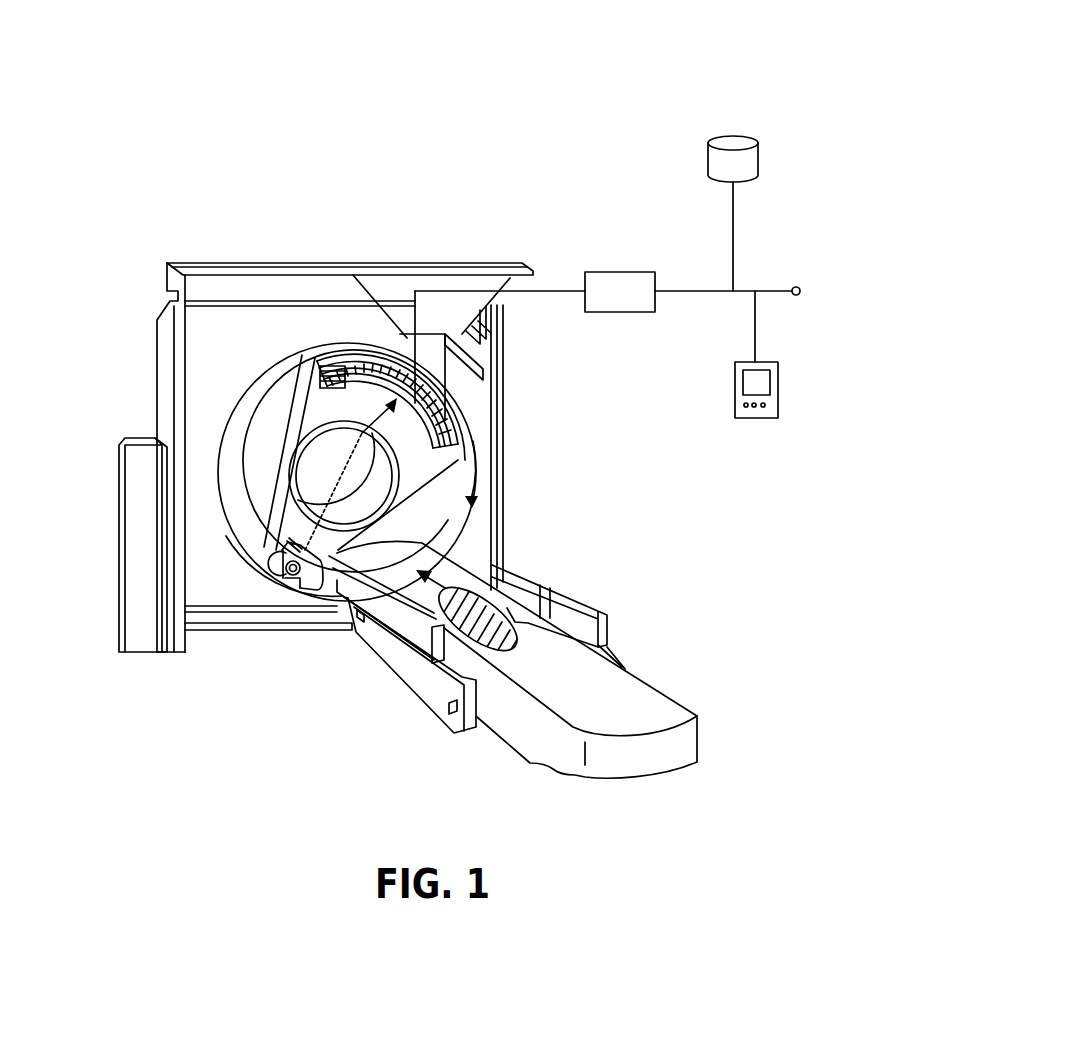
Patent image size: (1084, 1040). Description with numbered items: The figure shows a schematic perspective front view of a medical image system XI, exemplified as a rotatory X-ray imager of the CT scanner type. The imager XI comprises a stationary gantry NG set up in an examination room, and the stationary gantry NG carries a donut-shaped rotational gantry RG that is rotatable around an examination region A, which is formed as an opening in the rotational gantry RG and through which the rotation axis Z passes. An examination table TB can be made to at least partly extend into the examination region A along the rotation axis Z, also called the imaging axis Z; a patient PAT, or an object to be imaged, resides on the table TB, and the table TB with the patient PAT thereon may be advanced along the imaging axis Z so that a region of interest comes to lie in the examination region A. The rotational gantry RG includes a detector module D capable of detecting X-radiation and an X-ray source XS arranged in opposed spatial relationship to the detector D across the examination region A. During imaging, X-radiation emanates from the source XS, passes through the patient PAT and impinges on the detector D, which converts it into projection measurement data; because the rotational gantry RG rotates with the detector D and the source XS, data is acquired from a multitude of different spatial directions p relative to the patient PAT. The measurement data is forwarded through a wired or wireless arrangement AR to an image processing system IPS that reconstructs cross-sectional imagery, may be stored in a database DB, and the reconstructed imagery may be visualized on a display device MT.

The medical image system XI is at (207, 189).
The stationary gantry NG is at (168, 356).
The rotational gantry RG is at (318, 398).
The examination region A is at (310, 450).
The detector module D is at (455, 407).
The X-ray source XS is at (283, 577).
The spatial direction p is at (354, 474).
The examination table TB is at (633, 693).
The patient PAT is at (503, 618).
The rotation axis Z is at (520, 645).
The imaging arrangement / processing system AR is at (618, 84).
The image processing system IPS is at (600, 283).
The database DB is at (723, 163).
The display device MT is at (737, 380).